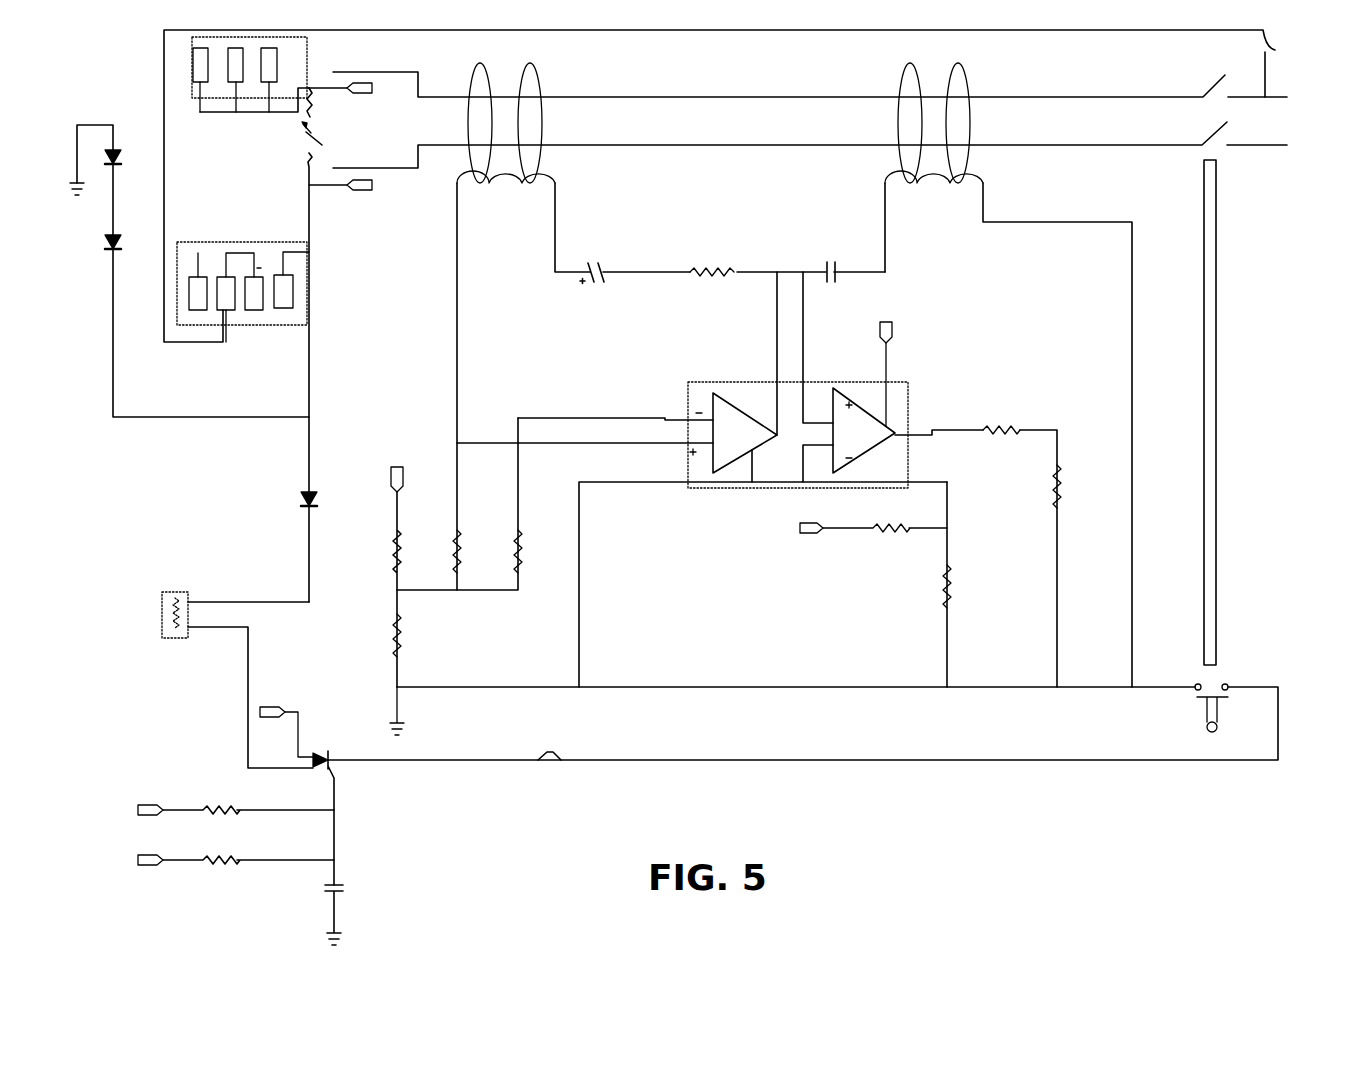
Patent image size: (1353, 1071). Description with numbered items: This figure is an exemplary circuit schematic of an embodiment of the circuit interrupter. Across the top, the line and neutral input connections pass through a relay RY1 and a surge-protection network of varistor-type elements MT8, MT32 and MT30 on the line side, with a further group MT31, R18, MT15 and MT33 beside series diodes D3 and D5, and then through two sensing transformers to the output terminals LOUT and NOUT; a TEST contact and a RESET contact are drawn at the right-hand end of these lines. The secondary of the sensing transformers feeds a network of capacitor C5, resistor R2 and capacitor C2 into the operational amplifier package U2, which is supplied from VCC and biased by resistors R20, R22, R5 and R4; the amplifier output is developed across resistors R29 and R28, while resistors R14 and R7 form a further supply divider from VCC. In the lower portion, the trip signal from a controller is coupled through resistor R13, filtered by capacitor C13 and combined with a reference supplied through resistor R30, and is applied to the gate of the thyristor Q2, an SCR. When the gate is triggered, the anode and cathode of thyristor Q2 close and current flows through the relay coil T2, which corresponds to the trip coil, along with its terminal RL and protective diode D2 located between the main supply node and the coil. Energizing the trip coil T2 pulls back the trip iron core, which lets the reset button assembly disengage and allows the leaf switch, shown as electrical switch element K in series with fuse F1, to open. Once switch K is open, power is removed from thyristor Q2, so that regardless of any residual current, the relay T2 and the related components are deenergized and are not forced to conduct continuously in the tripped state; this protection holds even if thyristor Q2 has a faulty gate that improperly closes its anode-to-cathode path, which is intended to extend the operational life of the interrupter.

The test switch TEST is at (1297, 54).
The line output LOUT is at (1309, 101).
The reset switch RESET is at (1218, 114).
The neutral output NOUT is at (1311, 149).
The metal oxide varistor MT8 is at (211, 80).
The metal oxide varistor MT32 is at (246, 76).
The metal oxide varistor MT30 is at (280, 76).
The relay RY1 is at (329, 252).
The diode D3 is at (130, 160).
The diode D5 is at (130, 245).
The varistor block MT31 is at (240, 282).
The resistor R18 is at (255, 289).
The varistor MT15 is at (317, 280).
The varistor MT33 is at (224, 357).
The capacitor C5 is at (594, 262).
The resistor R2 is at (712, 258).
The capacitor C2 is at (832, 261).
The operational amplifier U2 is at (798, 380).
The supply voltage VCC is at (884, 363).
The resistor R29 is at (998, 417).
The resistor R28 is at (1075, 486).
The resistor R14 is at (852, 515).
The resistor R7 is at (959, 586).
The electrical switch element K is at (1218, 713).
The fuse F1 is at (552, 747).
The resistor R20 is at (412, 566).
The resistor R22 is at (415, 635).
The resistor R5 is at (470, 551).
The resistor R4 is at (531, 551).
The diode D2 is at (327, 502).
The relay/trip coil T2 is at (216, 667).
The relay coil terminal RL is at (283, 722).
The thyristor (SCR) Q2 is at (374, 811).
The resistor R30 is at (213, 798).
The resistor R13 is at (205, 849).
The capacitor C13 is at (313, 913).